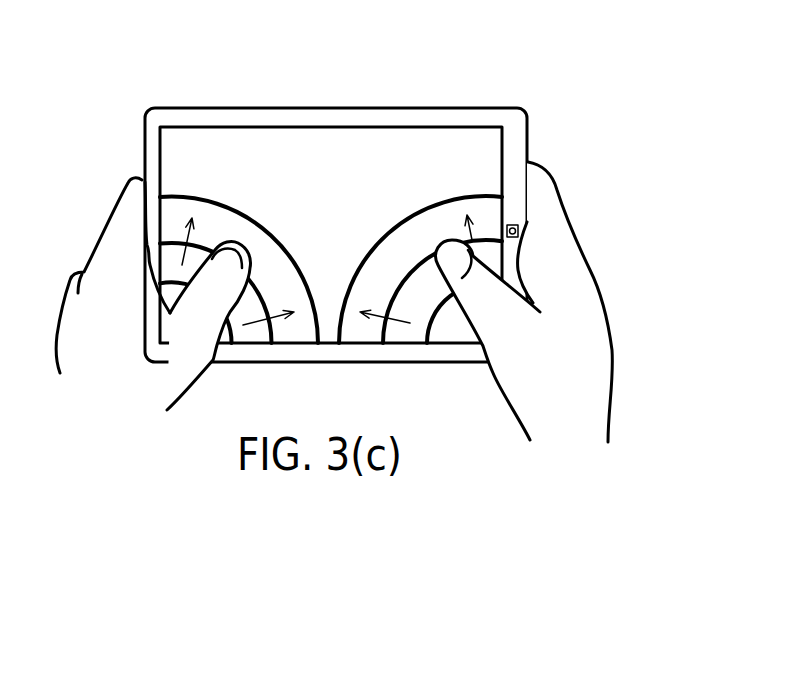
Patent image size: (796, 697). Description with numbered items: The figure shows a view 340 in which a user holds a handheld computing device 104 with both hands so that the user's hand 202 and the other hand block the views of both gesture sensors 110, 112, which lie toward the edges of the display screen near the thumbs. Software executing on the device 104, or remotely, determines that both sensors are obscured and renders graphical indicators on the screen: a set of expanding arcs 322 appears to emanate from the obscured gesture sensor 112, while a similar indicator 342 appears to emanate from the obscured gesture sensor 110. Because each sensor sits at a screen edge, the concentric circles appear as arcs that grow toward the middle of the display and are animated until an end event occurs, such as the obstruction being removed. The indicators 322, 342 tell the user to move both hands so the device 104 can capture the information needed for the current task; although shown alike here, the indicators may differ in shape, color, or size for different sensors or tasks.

The computing device 104 is at (439, 187).
The view 340 is at (698, 98).
The arcs 322 is at (275, 227).
The indicator 342 is at (433, 200).
The user's hand 202 is at (97, 233).
The gesture sensor 112 is at (158, 340).
The gesture sensor 110 is at (496, 345).